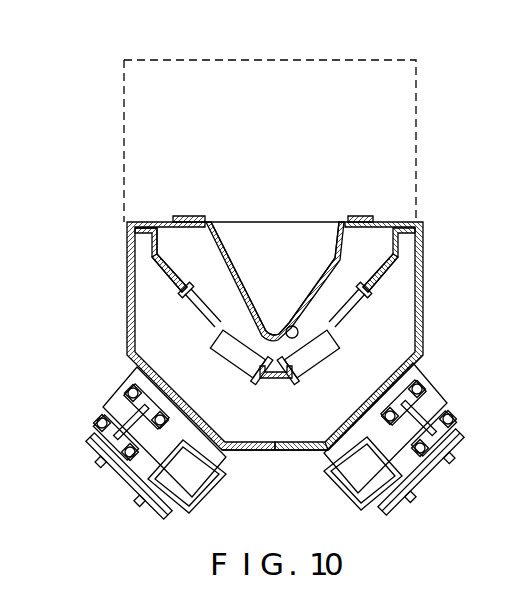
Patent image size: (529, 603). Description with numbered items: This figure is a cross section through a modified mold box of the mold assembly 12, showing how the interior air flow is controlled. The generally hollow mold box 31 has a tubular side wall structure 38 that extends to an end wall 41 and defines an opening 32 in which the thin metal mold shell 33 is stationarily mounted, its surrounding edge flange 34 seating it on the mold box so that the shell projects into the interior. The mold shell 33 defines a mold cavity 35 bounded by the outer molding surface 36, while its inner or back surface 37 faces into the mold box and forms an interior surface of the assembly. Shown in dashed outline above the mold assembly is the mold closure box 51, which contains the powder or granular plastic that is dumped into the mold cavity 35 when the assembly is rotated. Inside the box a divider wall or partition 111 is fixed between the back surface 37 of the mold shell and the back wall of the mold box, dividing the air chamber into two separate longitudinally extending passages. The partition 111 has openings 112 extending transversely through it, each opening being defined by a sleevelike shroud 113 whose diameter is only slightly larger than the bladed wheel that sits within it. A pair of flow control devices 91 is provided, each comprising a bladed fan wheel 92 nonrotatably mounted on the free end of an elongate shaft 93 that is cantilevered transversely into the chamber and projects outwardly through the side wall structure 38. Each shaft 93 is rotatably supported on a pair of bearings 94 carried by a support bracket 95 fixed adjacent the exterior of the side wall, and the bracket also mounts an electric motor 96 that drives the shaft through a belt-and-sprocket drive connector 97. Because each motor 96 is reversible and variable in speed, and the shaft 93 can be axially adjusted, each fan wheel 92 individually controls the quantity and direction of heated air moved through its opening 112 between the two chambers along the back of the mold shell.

The mold assembly 12 is at (447, 103).
The mold box 31 is at (328, 452).
The opening 32 is at (212, 228).
The mold shell 33 is at (226, 242).
The edge flange 34 is at (188, 216).
The mold cavity 35 is at (274, 246).
The outer molding surface 36 is at (338, 216).
The back surface 37 is at (293, 325).
The side wall structure 38 is at (295, 443).
The end wall 41 is at (316, 449).
The mold closure box 51 is at (388, 61).
The flow control device 91 is at (253, 417).
The fan wheel 92 is at (170, 292).
The shaft 93 is at (212, 337).
The bearings 94 is at (132, 387).
The support bracket 95 is at (102, 410).
The electric motor 96 is at (188, 486).
The drive connector 97 is at (118, 462).
The partition 111 is at (380, 250).
The openings 112 is at (134, 224).
The shroud 113 is at (262, 380).